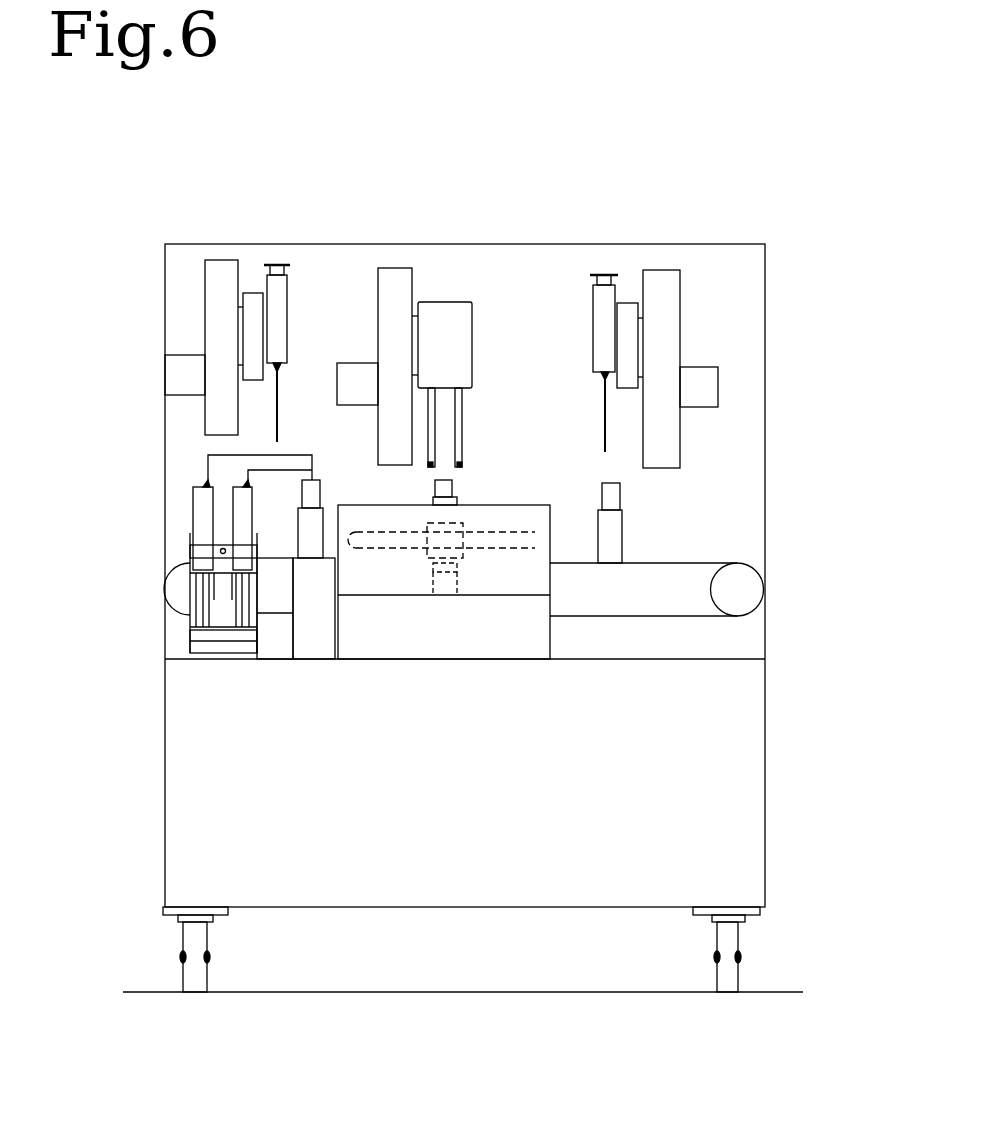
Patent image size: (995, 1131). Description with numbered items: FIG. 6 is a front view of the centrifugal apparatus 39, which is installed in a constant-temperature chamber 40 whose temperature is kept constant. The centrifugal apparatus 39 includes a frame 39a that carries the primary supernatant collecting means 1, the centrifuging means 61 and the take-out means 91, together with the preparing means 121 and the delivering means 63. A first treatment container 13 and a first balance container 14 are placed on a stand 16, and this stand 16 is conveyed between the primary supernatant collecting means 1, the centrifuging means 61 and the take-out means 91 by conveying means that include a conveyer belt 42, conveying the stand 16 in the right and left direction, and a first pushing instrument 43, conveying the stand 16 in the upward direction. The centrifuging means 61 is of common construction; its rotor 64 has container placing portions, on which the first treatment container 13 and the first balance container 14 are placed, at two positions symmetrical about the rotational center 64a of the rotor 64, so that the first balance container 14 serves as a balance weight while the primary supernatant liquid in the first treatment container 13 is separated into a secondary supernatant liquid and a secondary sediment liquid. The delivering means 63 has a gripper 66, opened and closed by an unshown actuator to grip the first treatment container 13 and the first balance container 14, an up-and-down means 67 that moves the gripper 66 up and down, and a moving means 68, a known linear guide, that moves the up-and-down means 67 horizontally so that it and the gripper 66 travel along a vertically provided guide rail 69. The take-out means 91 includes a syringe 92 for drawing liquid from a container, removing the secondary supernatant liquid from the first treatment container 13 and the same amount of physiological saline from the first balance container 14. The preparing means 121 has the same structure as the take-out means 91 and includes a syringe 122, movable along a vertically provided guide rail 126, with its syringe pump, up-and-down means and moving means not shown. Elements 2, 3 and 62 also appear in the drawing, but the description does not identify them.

The centrifugal apparatus 39 is at (498, 549).
The frame 39a is at (740, 771).
The constant-temperature chamber 40 is at (767, 331).
The preparing means 121 is at (223, 307).
The syringe 122 is at (278, 316).
The guide rail 126 is at (177, 382).
The delivering means 63 is at (411, 324).
The moving means 68 is at (413, 278).
The guide rail 69 is at (352, 390).
The up-and-down means 67 is at (420, 366).
The gripper 66 is at (462, 422).
The take-out means 91 is at (624, 323).
The syringe 92 is at (608, 340).
The first balance container 14 is at (313, 492).
The first treatment container 13 is at (462, 497).
The first cylinder 2 is at (200, 513).
The second cylinder 3 is at (247, 524).
The primary supernatant collecting means 1 is at (220, 652).
The first pushing instrument 43 is at (306, 652).
The stand 16 is at (307, 552).
The centrifuging means 61 is at (570, 611).
The conveyor housing 62 is at (500, 578).
The rotor 64 is at (440, 546).
The rotational center 64a is at (443, 585).
The conveyer belt 42 is at (692, 580).